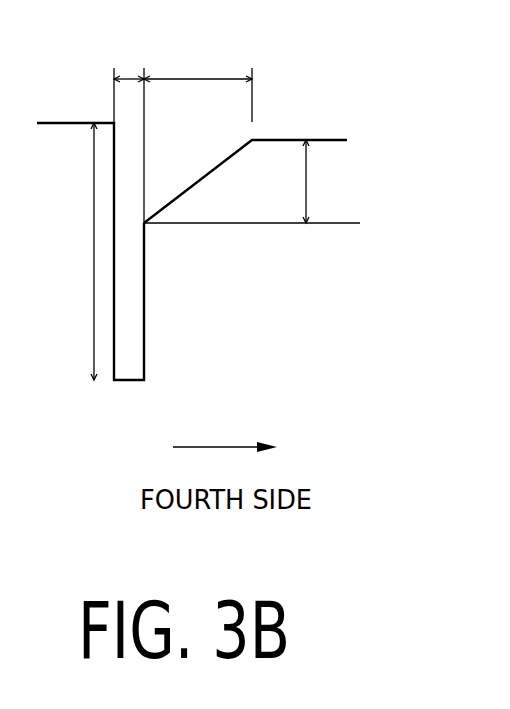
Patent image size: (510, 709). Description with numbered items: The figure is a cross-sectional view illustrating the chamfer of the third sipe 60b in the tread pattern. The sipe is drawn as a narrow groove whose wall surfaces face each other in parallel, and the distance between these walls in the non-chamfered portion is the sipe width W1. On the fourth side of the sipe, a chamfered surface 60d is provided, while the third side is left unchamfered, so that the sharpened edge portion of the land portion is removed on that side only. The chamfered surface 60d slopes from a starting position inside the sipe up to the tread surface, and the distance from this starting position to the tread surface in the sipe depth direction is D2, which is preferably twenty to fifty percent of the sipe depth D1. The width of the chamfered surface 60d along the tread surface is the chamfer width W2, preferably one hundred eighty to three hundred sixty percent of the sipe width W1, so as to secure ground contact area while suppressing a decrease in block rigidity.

The third sipe 60b is at (145, 280).
The chamfered surface 60d is at (226, 160).
The sipe width W1 is at (125, 78).
The chamfer width W2 is at (198, 66).
The sipe depth D1 is at (78, 251).
The distance from starting position of chamfered surface to tread surface D2 is at (325, 181).